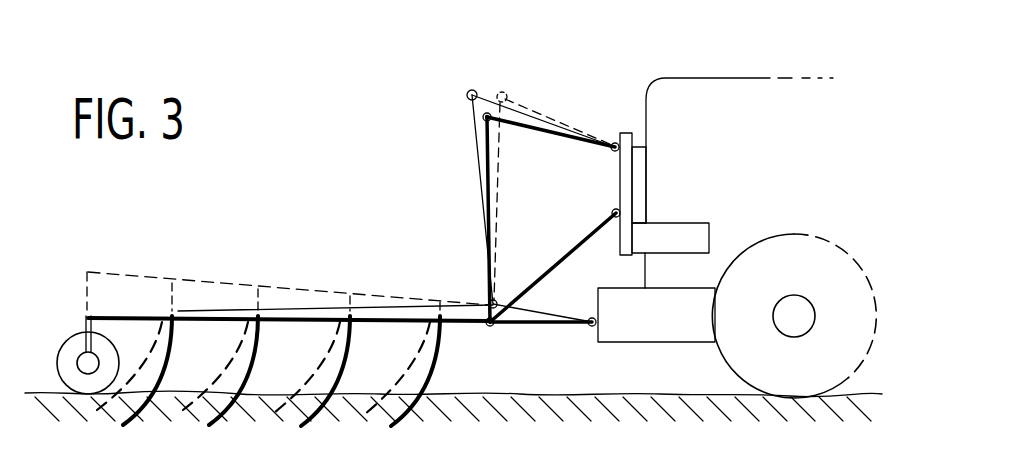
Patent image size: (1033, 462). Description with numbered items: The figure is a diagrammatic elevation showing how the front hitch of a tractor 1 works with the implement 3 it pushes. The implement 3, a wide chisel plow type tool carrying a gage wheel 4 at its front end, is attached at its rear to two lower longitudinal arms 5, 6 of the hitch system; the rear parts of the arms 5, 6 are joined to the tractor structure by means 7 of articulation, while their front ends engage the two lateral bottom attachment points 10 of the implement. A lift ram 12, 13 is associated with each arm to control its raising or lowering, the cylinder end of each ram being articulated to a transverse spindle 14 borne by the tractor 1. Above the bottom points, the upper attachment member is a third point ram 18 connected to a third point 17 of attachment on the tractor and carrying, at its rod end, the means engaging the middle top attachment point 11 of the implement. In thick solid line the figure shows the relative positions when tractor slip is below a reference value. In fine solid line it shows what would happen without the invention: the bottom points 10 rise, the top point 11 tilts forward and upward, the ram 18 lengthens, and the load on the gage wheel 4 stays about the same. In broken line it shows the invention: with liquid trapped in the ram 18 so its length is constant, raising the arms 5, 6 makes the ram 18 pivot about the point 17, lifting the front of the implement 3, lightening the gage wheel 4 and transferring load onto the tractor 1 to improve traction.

The tractor 1 is at (724, 70).
The implement 3 is at (209, 303).
The gage wheel 4 is at (72, 350).
The lower longitudinal arm 5 is at (541, 346).
The lower longitudinal arm 6 is at (548, 324).
The means of articulation 7 is at (592, 328).
The lateral bottom attachment point 10 is at (491, 300).
The middle top attachment point 11 is at (469, 98).
The lift ram 12 is at (553, 256).
The lift ram 13 is at (550, 264).
The transverse spindle 14 is at (618, 211).
The third point of attachment 17 is at (618, 146).
The third point ram 18 is at (538, 117).